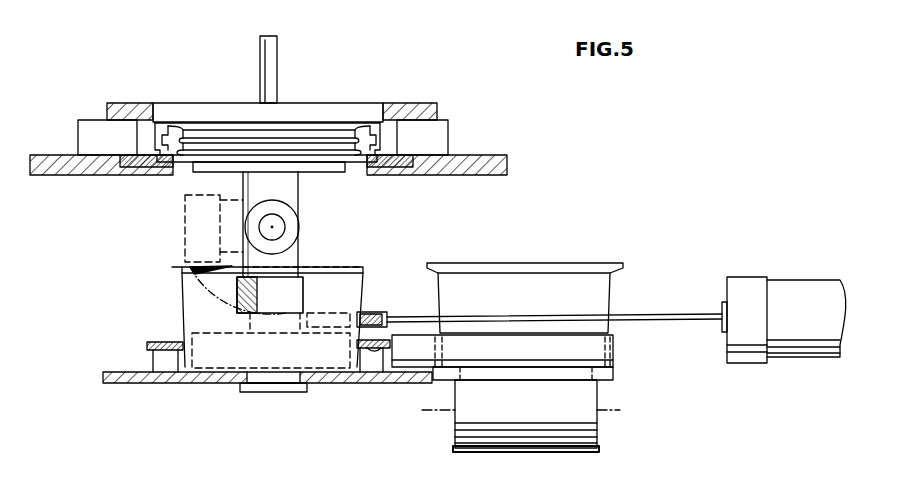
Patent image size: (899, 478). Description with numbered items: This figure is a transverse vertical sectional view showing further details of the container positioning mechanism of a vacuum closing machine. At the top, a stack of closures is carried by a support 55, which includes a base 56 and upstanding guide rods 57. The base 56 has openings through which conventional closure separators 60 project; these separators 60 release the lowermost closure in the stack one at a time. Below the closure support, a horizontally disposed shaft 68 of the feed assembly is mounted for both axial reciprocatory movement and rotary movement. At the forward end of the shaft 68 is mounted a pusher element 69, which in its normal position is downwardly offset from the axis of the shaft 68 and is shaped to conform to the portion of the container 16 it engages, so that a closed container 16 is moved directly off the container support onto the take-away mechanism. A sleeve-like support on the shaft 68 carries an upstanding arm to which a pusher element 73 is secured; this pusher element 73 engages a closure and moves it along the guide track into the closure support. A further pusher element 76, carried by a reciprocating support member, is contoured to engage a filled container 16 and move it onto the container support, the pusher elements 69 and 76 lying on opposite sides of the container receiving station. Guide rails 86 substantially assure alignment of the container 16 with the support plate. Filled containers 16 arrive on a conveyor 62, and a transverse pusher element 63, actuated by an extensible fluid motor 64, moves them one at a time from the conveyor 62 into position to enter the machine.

The container 16 is at (335, 277).
The support 55 is at (423, 92).
The base 56 is at (118, 102).
The guide rods 57 is at (280, 53).
The closure separators 60 is at (87, 135).
The conveyor 62 is at (527, 435).
The transverse pusher element 63 is at (363, 310).
The extensible fluid motor 64 is at (792, 292).
The shaft 68 is at (287, 223).
The pusher element 69 is at (200, 220).
The pusher element 73 is at (327, 177).
The pusher element 76 is at (217, 357).
The guide rails 86 is at (155, 338).